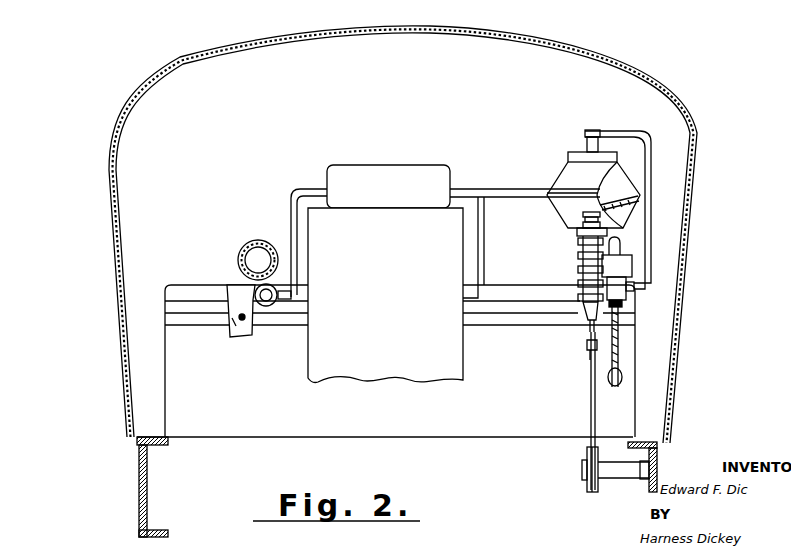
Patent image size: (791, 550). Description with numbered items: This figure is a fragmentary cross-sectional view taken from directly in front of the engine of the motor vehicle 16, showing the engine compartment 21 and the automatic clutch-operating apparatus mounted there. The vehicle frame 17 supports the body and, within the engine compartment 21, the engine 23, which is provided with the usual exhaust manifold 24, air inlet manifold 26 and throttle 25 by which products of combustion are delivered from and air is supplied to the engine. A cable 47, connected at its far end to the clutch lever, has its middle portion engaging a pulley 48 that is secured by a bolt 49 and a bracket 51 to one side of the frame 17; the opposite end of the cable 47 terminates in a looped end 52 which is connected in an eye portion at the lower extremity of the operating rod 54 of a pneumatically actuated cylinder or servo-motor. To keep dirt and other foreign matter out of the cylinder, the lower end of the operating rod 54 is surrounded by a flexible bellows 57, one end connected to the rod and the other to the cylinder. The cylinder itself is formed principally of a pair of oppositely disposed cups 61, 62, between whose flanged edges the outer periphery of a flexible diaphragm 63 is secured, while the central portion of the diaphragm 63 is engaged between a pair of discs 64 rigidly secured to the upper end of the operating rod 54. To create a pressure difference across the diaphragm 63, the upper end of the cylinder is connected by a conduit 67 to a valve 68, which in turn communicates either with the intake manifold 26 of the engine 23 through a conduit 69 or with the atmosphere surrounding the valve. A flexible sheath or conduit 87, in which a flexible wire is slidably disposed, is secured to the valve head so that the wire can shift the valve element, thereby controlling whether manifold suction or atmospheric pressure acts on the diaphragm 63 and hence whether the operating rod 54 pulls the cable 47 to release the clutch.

The motor vehicle 16 is at (378, 221).
The engine compartment 21 is at (146, 113).
The frame 17 is at (146, 485).
The engine 23 is at (358, 172).
The exhaust manifold 24 is at (258, 240).
The throttle 25 is at (225, 343).
The air inlet manifold 26 is at (233, 287).
The conduit 69 is at (300, 193).
The cup 61 is at (563, 178).
The cup 62 is at (563, 212).
The discs 64 is at (587, 187).
The flexible diaphragm 63 is at (595, 193).
The operating rod 54 is at (615, 222).
The flexible bellows 57 is at (582, 268).
The valve 68 is at (640, 263).
The conduit 67 is at (635, 130).
The flexible sheath 87 is at (617, 353).
The cable 47 is at (592, 393).
The looped end 52 is at (590, 347).
The pulley 48 is at (587, 450).
The bolt 49 is at (585, 470).
The bracket 51 is at (622, 478).